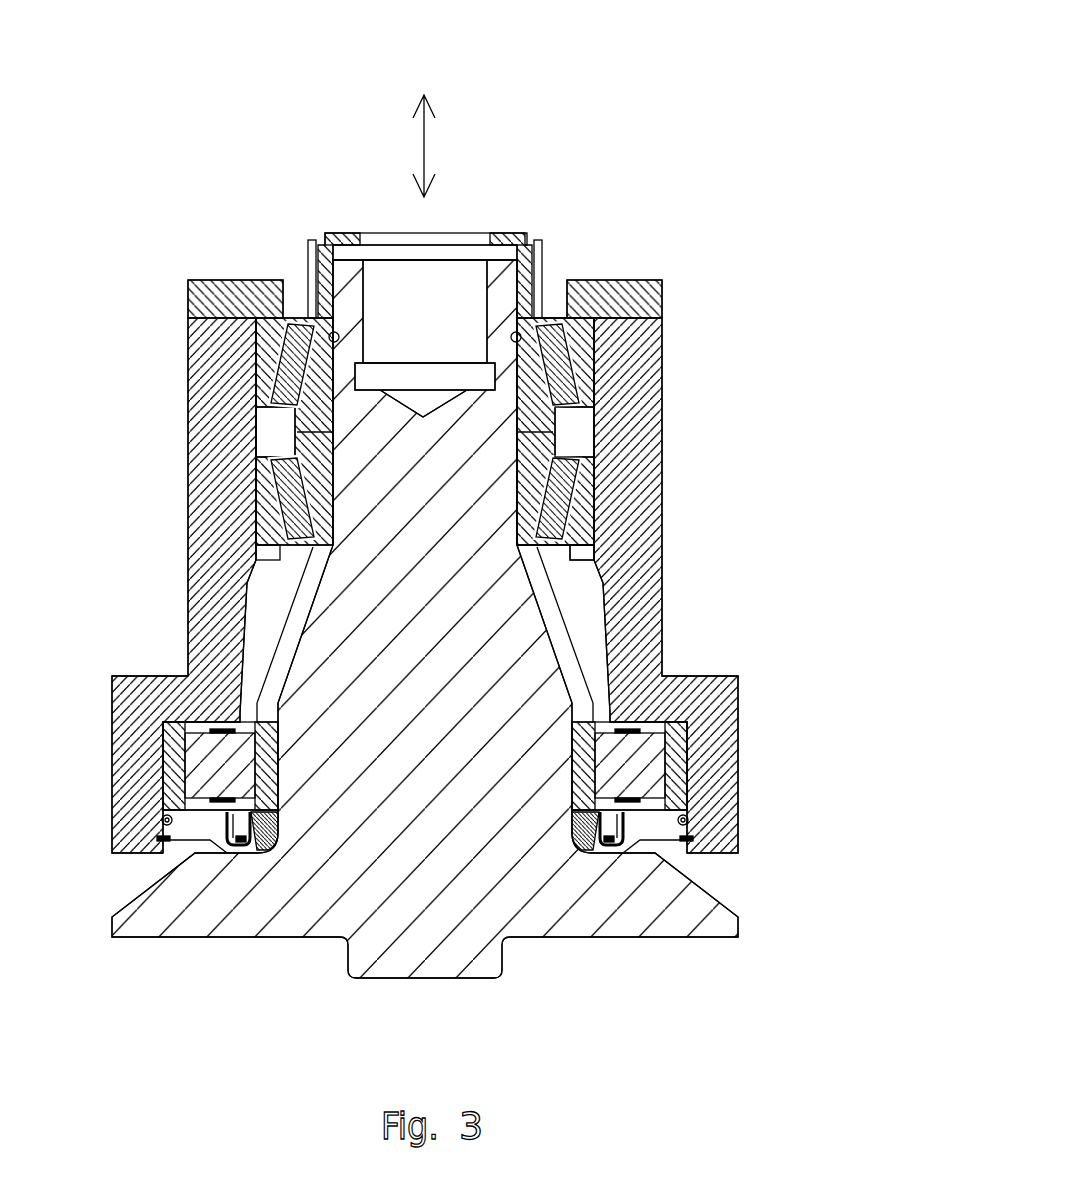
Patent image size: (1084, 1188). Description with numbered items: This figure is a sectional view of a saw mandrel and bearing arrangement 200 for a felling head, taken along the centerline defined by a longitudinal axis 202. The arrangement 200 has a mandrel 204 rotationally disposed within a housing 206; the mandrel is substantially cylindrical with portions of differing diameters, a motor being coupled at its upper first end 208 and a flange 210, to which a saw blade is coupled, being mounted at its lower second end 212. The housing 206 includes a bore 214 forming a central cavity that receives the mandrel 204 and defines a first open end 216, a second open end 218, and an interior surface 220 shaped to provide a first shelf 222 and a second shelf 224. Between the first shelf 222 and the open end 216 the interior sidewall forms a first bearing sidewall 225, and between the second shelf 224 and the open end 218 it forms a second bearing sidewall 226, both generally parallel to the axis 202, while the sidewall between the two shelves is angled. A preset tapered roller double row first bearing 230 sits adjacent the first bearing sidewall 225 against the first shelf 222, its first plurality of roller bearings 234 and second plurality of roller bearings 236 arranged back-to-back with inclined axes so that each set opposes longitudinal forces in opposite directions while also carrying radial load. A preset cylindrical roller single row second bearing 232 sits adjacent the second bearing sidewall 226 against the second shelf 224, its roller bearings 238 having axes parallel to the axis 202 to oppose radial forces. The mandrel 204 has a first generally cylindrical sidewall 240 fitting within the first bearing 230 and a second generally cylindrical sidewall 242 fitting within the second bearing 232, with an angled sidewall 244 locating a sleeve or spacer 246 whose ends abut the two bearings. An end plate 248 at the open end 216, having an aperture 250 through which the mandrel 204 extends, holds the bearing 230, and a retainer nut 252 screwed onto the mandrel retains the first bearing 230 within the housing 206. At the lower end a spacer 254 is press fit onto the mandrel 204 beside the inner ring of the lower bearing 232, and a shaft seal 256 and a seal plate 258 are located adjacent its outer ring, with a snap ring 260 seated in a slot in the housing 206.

The saw mandrel and bearing arrangement 200 is at (638, 114).
The longitudinal axis 202 is at (424, 147).
The mandrel 204 is at (520, 644).
The housing 206 is at (258, 620).
The first end 208 is at (497, 282).
The flange 210 is at (705, 915).
The second end 212 is at (305, 815).
The bore 214 is at (255, 598).
The first open end 216 is at (215, 300).
The second open end 218 is at (170, 848).
The interior surface 220 is at (217, 441).
The first shelf 222 is at (626, 439).
The second shelf 224 is at (176, 714).
The first bearing sidewall 225 is at (598, 362).
The second bearing sidewall 226 is at (167, 737).
The first bearing 230 is at (255, 383).
The second bearing 232 is at (180, 748).
The first plurality of roller bearings 234 is at (293, 368).
The second plurality of roller bearings 236 is at (287, 483).
The roller bearings 238 is at (659, 762).
The first generally cylindrical sidewall 240 is at (360, 522).
The second generally cylindrical sidewall 242 is at (582, 775).
The angled sidewall 244 is at (572, 567).
The spacer 246 is at (572, 662).
The end plate 248 is at (648, 297).
The aperture 250 is at (296, 292).
The retainer nut 252 is at (343, 238).
The spacer 254 is at (586, 850).
The shaft seal 256 is at (243, 848).
The seal plate 258 is at (165, 821).
The snap ring 260 is at (683, 838).